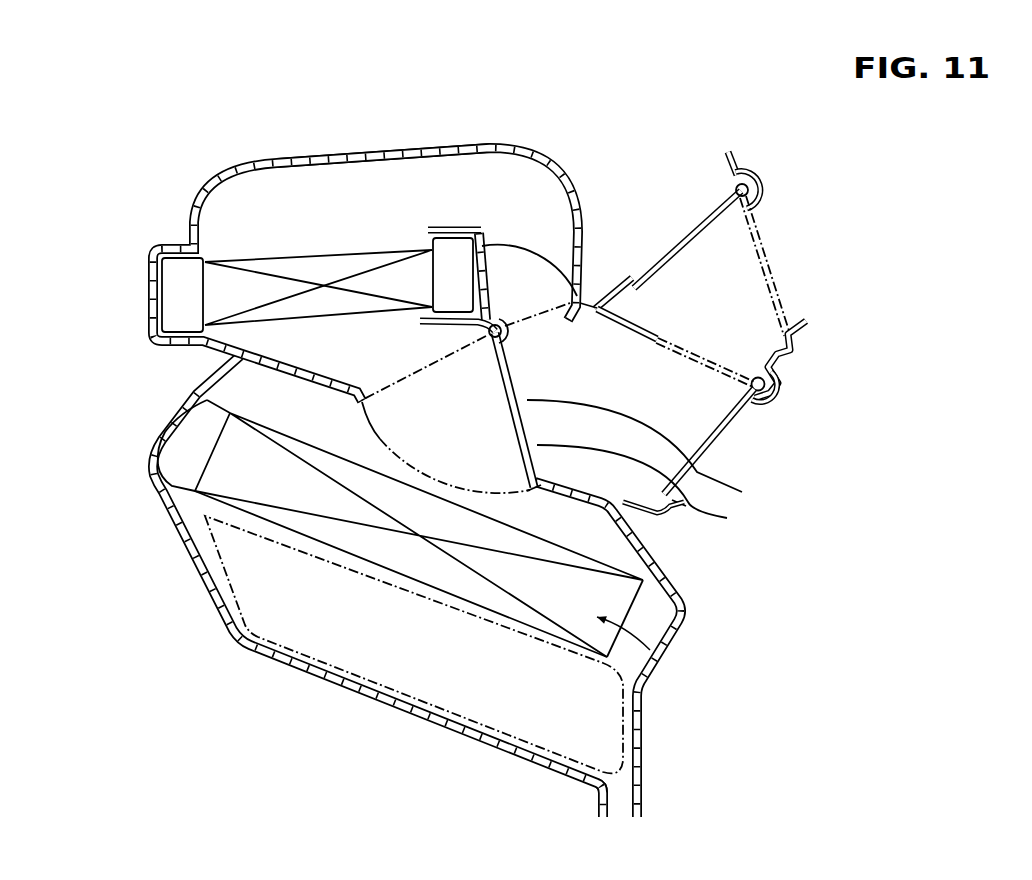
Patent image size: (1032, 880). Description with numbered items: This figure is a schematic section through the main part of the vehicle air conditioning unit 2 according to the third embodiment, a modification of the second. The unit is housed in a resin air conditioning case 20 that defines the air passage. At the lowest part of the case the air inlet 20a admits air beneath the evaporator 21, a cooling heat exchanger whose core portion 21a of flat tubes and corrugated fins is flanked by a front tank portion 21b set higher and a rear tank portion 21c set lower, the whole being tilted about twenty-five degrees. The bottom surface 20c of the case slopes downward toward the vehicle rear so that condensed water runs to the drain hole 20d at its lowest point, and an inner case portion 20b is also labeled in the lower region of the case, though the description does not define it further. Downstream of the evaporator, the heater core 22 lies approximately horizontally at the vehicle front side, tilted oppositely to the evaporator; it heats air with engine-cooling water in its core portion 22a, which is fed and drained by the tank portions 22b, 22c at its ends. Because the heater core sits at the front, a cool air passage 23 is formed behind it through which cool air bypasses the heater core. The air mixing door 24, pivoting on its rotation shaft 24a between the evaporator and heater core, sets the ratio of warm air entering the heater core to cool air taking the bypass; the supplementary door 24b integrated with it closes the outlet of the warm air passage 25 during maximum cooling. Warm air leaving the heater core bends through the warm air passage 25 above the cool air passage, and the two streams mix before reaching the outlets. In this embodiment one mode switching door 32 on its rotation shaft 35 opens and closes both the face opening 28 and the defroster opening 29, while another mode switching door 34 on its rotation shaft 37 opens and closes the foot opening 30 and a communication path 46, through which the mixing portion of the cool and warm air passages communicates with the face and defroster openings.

The air conditioning unit 2 is at (480, 451).
The air conditioning case 20 is at (292, 155).
The air inlet 20a is at (539, 739).
The casing bottom wall 20b is at (462, 668).
The bottom surface 20c is at (420, 718).
The drain hole 20d is at (617, 800).
The evaporator 21 is at (357, 548).
The core portion 21a is at (285, 487).
The tank portion 21b is at (187, 448).
The tank portion 21c is at (643, 620).
The heater core 22 is at (322, 263).
The core portion 22a is at (278, 265).
The tank portion 22b is at (180, 295).
The tank portion 22c is at (447, 257).
The cool air passage 23 is at (649, 492).
The air mixing door 24 is at (635, 512).
The rotation shaft 24a is at (510, 315).
The supplementary door 24b is at (489, 321).
The warm air passage 25 is at (347, 190).
The face opening 28 is at (783, 290).
The defroster opening 29 is at (684, 222).
The foot opening 30 is at (737, 435).
The mode switching door 32 is at (668, 248).
The mode switching door 34 is at (650, 454).
The rotation shaft 35 is at (752, 176).
The rotation shaft 37 is at (777, 390).
The communication path 46 is at (713, 362).